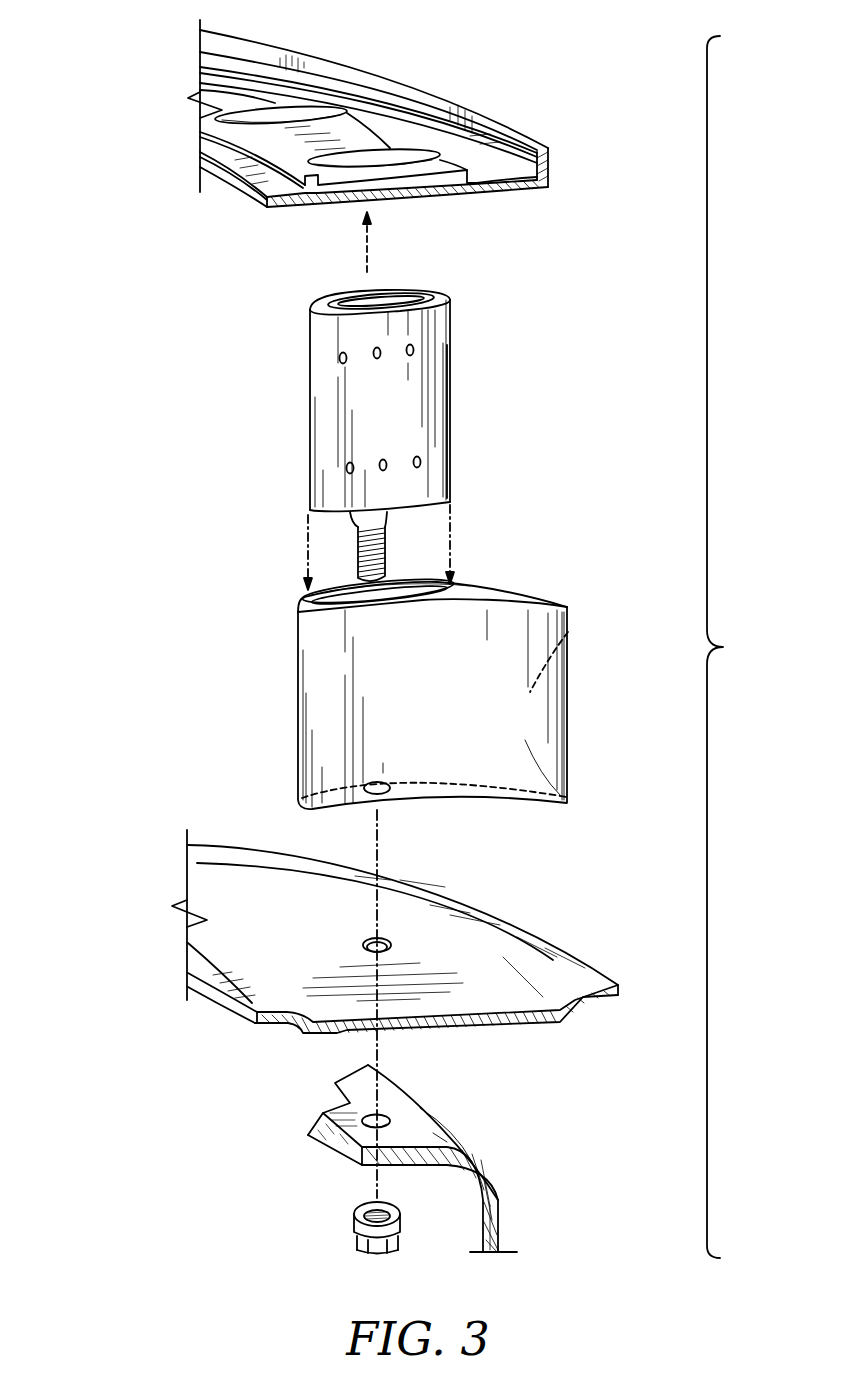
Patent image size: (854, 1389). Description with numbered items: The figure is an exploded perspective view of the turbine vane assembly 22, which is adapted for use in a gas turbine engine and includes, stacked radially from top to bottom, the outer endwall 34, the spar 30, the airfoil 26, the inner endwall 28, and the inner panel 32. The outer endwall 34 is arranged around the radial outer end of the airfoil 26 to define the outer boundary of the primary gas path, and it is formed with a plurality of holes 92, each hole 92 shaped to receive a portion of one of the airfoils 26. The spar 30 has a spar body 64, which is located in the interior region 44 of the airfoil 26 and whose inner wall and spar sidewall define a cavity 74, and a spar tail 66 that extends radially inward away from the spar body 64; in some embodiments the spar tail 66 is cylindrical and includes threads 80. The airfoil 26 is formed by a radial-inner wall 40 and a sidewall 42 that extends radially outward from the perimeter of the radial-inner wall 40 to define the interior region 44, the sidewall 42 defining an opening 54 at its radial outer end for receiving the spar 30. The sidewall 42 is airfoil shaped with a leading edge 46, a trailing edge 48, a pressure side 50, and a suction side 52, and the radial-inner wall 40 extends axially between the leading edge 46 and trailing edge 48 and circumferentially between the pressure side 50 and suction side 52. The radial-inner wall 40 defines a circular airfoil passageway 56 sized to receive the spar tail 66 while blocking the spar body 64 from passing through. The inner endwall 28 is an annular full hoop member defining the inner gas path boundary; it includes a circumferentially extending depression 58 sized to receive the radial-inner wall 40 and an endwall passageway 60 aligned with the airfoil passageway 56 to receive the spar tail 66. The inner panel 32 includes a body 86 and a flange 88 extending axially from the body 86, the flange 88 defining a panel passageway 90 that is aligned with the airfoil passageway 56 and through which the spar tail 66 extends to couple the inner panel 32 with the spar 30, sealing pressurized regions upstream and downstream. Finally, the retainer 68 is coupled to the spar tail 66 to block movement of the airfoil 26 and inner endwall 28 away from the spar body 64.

The turbine vane assembly 22 is at (737, 647).
The airfoil 26 is at (298, 652).
The inner endwall 28 is at (220, 940).
The spar 30 is at (308, 433).
The inner panel 32 is at (500, 1163).
The outer endwall 34 is at (230, 152).
The radial-inner wall 40 is at (330, 795).
The sidewall 42 is at (482, 760).
The interior region 44 is at (310, 588).
The leading edge 46 is at (300, 715).
The trailing edge 48 is at (569, 680).
The pressure side 50 is at (525, 740).
The suction side 52 is at (568, 632).
The opening 54 is at (395, 592).
The airfoil passageway 56 is at (373, 797).
The circumferentially extending depression 58 is at (479, 988).
The endwall passageway 60 is at (387, 930).
The spar body 64 is at (448, 392).
The spar tail 66 is at (390, 538).
The retainer 68 is at (350, 1231).
The cavity 74 is at (394, 382).
The threads 80 is at (355, 560).
The body 86 is at (508, 1196).
The flange 88 is at (372, 1172).
The panel passageway 90 is at (387, 1112).
The hole 92 is at (395, 155).